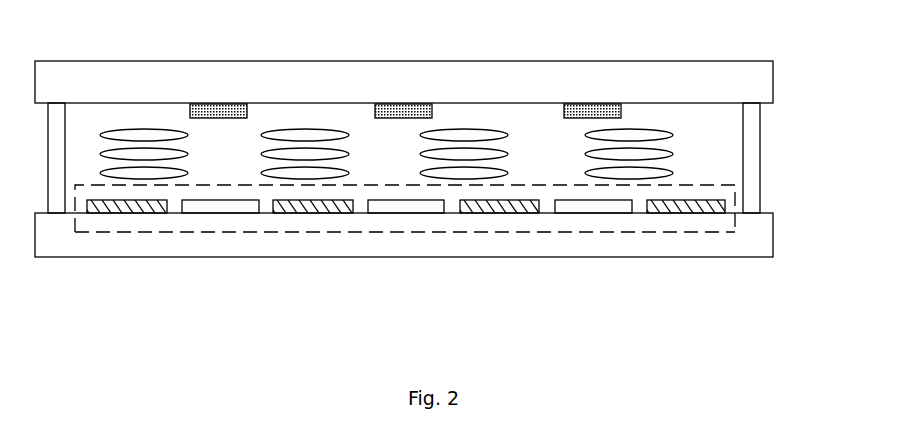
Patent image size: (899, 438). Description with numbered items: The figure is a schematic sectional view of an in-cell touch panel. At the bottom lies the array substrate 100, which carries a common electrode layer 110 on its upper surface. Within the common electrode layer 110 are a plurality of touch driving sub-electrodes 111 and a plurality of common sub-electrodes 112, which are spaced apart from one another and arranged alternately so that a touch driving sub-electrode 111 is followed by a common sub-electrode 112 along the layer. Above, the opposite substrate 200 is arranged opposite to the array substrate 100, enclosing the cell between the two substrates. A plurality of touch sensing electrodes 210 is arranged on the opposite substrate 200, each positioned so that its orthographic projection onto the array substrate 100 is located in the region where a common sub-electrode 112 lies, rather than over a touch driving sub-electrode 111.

The array substrate 100 is at (445, 218).
The common electrode layer 110 is at (405, 246).
The touch driving sub-electrode 111 is at (396, 248).
The common sub-electrode 112 is at (407, 249).
The opposite substrate 200 is at (444, 66).
The touch sensing electrode 210 is at (405, 65).